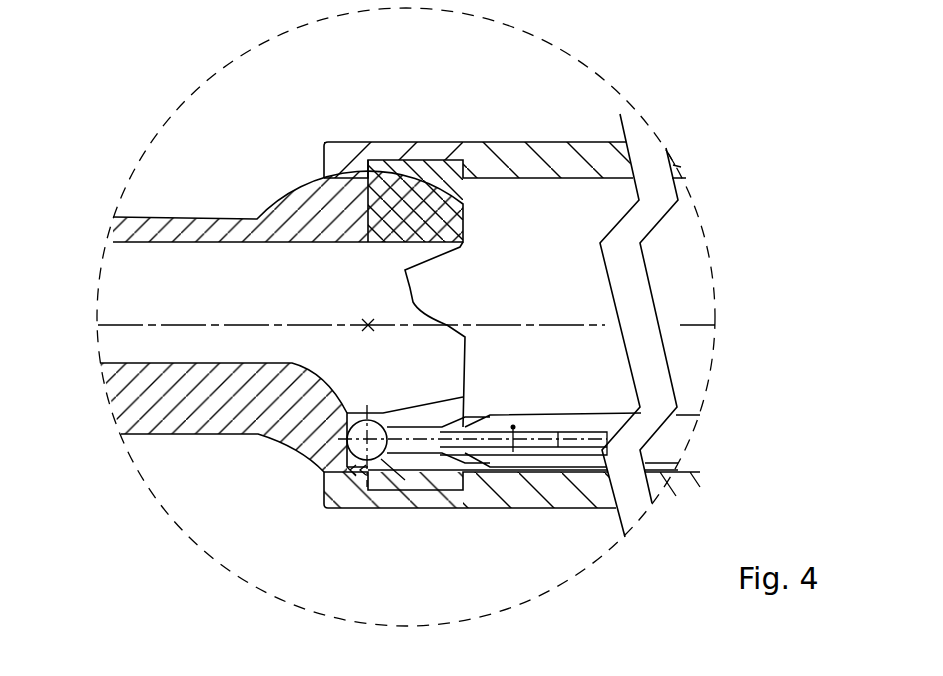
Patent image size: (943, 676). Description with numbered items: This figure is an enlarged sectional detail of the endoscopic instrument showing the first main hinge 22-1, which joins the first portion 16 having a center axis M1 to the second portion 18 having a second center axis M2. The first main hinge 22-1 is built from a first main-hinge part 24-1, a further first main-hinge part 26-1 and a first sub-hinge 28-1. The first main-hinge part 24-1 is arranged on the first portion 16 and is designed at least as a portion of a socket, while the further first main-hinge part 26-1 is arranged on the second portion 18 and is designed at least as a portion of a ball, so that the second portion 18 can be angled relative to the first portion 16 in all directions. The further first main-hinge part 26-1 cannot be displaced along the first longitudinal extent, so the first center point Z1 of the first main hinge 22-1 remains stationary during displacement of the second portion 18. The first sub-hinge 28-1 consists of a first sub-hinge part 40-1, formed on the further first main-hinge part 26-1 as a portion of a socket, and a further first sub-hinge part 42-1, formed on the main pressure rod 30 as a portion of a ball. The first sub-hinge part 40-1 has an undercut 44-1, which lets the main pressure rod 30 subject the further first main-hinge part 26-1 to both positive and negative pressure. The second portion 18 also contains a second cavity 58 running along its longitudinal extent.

The first portion 16 is at (577, 142).
The second portion 18 is at (163, 217).
The first main hinge 22-1 is at (419, 128).
The first main-hinge part 24-1 is at (308, 155).
The further first main-hinge part 26-1 is at (231, 473).
The first sub-hinge 28-1 is at (379, 482).
The main pressure rod 30 is at (692, 281).
The first sub-hinge part 40-1 is at (350, 478).
The further first sub-hinge part 42-1 is at (380, 468).
The undercut 44-1 is at (390, 404).
The second cavity 58 is at (210, 288).
The first center point Z1 is at (363, 322).
The center axis M1 is at (590, 327).
The second center axis M2 is at (147, 325).